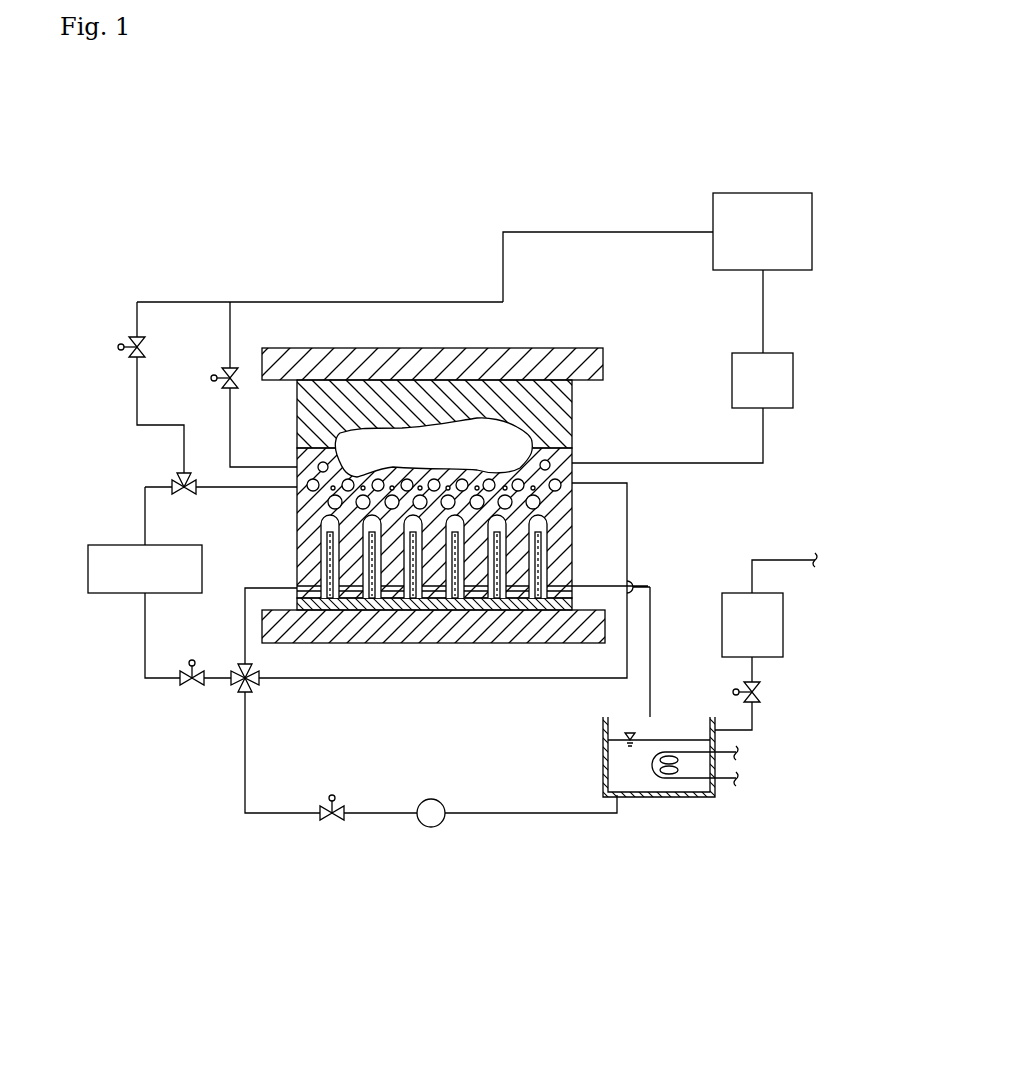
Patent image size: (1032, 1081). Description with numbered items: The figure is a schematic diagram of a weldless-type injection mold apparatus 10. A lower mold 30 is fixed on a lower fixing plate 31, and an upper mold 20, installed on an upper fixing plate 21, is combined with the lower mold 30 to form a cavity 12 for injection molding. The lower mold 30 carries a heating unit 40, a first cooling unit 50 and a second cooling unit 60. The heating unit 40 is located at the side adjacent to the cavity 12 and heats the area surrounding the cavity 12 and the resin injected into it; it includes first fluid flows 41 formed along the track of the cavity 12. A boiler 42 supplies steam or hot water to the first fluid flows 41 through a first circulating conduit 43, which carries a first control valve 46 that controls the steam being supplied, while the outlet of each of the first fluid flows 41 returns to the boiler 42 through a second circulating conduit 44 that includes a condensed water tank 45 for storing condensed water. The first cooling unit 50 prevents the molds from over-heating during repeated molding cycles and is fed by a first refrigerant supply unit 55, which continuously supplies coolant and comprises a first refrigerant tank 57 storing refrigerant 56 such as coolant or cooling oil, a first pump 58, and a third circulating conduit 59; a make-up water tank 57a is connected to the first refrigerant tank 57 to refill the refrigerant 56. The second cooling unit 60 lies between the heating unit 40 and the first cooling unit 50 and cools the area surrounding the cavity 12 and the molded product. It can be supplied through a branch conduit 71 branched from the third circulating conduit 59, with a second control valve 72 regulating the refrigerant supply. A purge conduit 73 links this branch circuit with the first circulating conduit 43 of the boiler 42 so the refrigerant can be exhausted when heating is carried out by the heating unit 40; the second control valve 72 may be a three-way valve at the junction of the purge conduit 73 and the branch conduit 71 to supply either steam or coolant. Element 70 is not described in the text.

The weldless-type injection mold apparatus 10 is at (240, 140).
The cavity 12 is at (368, 438).
The upper mold 20 is at (560, 405).
The upper fixing plate 21 is at (598, 378).
The lower mold 30 is at (520, 523).
The lower fixing plate 31 is at (605, 626).
The heating unit 40 is at (291, 460).
The first fluid flows 41 is at (545, 465).
The boiler 42 is at (763, 197).
The first circulating conduit 43 is at (590, 232).
The second circulating conduit 44 is at (763, 312).
The condensed water tank 45 is at (793, 380).
The first control valve 46 is at (221, 374).
The first cooling unit 50 is at (322, 612).
The first refrigerant supply unit 55 is at (583, 848).
The refrigerant 56 is at (628, 768).
The first refrigerant tank 57 is at (693, 792).
The make-up water tank 57a is at (783, 625).
The first pump 58 is at (433, 827).
The third circulating conduit 59 is at (514, 817).
The second cooling unit 60 is at (564, 502).
The vacuum unit 70 is at (147, 697).
The branch conduit 71 is at (146, 635).
The second control valve 72 is at (177, 474).
The purge conduit 73 is at (137, 390).